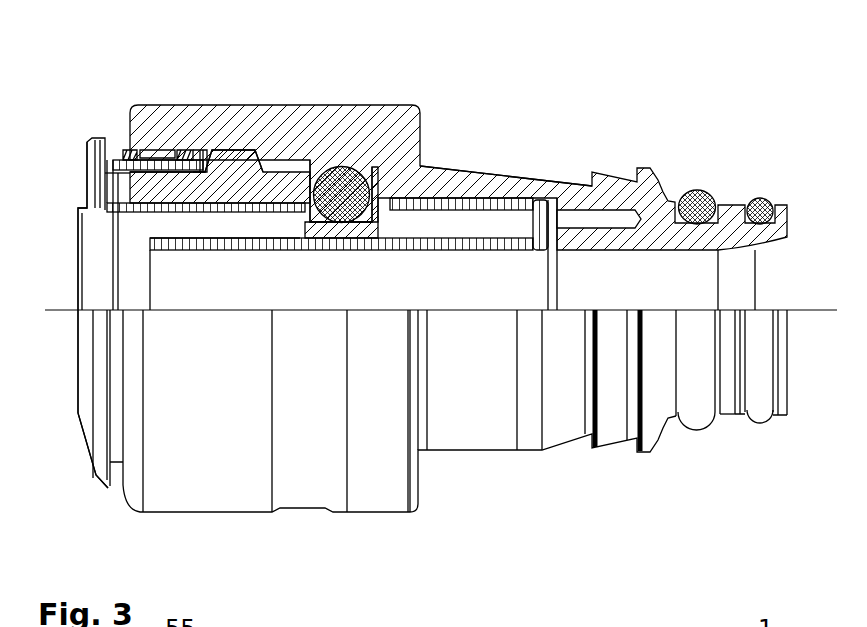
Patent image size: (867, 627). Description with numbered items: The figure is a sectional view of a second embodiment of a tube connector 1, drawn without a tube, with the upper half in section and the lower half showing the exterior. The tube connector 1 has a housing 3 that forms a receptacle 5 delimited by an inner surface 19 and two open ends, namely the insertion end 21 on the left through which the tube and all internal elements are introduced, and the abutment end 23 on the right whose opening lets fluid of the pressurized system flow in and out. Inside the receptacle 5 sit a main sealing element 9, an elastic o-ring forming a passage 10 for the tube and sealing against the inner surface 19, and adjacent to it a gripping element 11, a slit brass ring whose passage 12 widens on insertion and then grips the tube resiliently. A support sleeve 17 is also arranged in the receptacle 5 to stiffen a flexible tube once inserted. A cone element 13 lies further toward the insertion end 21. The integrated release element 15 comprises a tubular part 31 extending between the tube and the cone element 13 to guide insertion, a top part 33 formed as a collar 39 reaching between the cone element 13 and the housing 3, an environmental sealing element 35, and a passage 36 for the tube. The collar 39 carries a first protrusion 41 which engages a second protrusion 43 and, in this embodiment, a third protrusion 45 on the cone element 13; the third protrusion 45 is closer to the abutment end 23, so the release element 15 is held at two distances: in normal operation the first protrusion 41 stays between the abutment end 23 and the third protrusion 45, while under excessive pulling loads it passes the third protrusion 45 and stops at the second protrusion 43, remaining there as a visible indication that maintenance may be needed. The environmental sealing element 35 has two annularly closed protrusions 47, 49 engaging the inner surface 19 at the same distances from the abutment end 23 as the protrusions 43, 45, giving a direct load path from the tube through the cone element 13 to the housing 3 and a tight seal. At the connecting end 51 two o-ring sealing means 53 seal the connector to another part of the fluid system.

The tube connector 1 is at (716, 116).
The housing 3 is at (443, 400).
The receptacle 5 is at (386, 164).
The main sealing element 9 is at (368, 170).
The passage 10 is at (354, 300).
The gripping element 11 is at (338, 182).
The passage 12 is at (311, 300).
The cone element 13 is at (224, 162).
The integrated release element 15 is at (74, 482).
The support sleeve 17 is at (521, 202).
The inner surface 19 is at (392, 172).
The insertion end 21 is at (66, 365).
The abutment end 23 is at (702, 300).
The tubular part 31 is at (214, 208).
The top part 33 is at (105, 490).
The environmental sealing element 35 is at (101, 208).
The passage 36 is at (164, 300).
The collar 39 is at (158, 166).
The first protrusion 41 is at (200, 142).
The second protrusion 43 is at (120, 150).
The third protrusion 45 is at (152, 152).
The protrusion 47 is at (183, 152).
The protrusion 49 is at (130, 152).
The connecting end 51 is at (714, 482).
The sealing means 53 is at (698, 410).